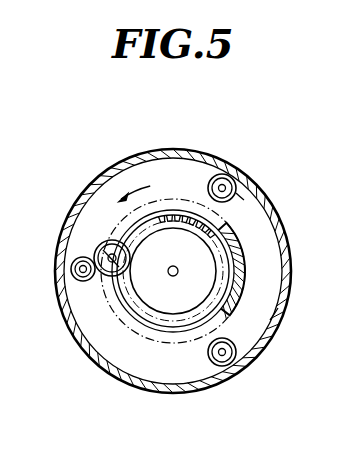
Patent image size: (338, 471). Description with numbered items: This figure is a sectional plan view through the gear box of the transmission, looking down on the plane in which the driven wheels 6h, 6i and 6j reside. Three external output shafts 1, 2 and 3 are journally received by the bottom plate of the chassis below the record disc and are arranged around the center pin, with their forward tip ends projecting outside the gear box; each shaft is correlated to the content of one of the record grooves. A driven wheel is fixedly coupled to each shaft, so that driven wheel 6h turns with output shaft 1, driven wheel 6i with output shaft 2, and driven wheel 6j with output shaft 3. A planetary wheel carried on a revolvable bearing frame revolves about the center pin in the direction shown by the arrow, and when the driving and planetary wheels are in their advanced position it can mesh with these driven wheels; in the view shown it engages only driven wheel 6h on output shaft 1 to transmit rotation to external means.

The external output shaft 1 is at (79, 266).
The external output shaft 2 is at (224, 354).
The external output shaft 3 is at (224, 190).
The driven wheel 6h is at (62, 303).
The driven wheel 6i is at (272, 324).
The driven wheel 6j is at (238, 192).